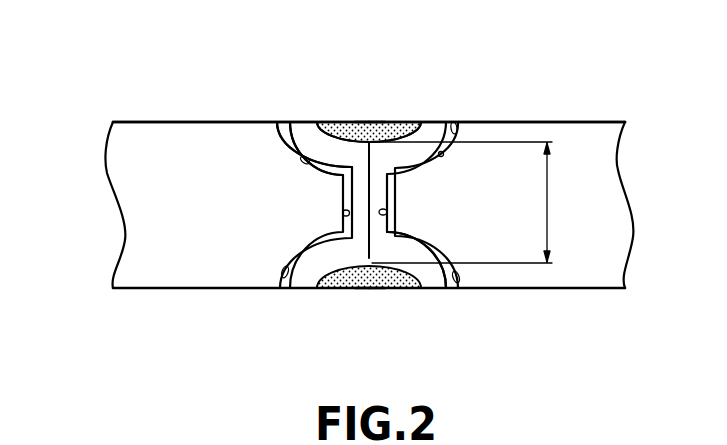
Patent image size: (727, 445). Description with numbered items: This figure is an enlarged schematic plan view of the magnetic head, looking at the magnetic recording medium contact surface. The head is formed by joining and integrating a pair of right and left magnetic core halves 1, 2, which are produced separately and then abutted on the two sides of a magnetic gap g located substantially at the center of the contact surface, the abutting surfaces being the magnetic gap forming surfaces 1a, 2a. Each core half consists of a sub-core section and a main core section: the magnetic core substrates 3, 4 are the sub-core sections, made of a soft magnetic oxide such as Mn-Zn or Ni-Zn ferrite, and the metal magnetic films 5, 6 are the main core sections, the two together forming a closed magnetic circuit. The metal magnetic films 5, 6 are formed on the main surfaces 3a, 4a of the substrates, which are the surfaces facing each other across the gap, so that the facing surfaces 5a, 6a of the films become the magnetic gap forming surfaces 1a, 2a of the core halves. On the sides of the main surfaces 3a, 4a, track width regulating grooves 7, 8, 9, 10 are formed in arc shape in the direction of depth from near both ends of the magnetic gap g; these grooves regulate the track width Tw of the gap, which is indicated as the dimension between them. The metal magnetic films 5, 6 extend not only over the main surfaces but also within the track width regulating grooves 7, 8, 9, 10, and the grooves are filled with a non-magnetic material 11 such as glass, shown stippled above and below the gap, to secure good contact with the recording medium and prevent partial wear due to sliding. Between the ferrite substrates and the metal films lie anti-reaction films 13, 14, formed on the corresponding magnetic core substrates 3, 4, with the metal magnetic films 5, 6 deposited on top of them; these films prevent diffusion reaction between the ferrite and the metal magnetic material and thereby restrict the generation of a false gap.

The magnetic core half 1 is at (183, 116).
The magnetic gap forming surface 1a is at (372, 268).
The magnetic core half 2 is at (547, 120).
The magnetic gap forming surface 2a is at (362, 122).
The magnetic core substrate 3 is at (128, 192).
The main surface 3a is at (343, 213).
The magnetic core substrate 4 is at (598, 182).
The main surface 4a is at (393, 220).
The metal magnetic film 5 is at (305, 135).
The facing surface 5a is at (373, 243).
The metal magnetic film 6 is at (428, 132).
The facing surface 6a is at (347, 148).
The track width regulating groove 7 is at (304, 163).
The track width regulating groove 8 is at (283, 274).
The track width regulating groove 9 is at (442, 153).
The track width regulating groove 10 is at (455, 285).
The non-magnetic material 11 is at (395, 122).
The anti-reaction film 13 is at (283, 149).
The anti-reaction film 14 is at (463, 156).
The magnetic gap g is at (371, 183).
The track width Tw is at (479, 202).